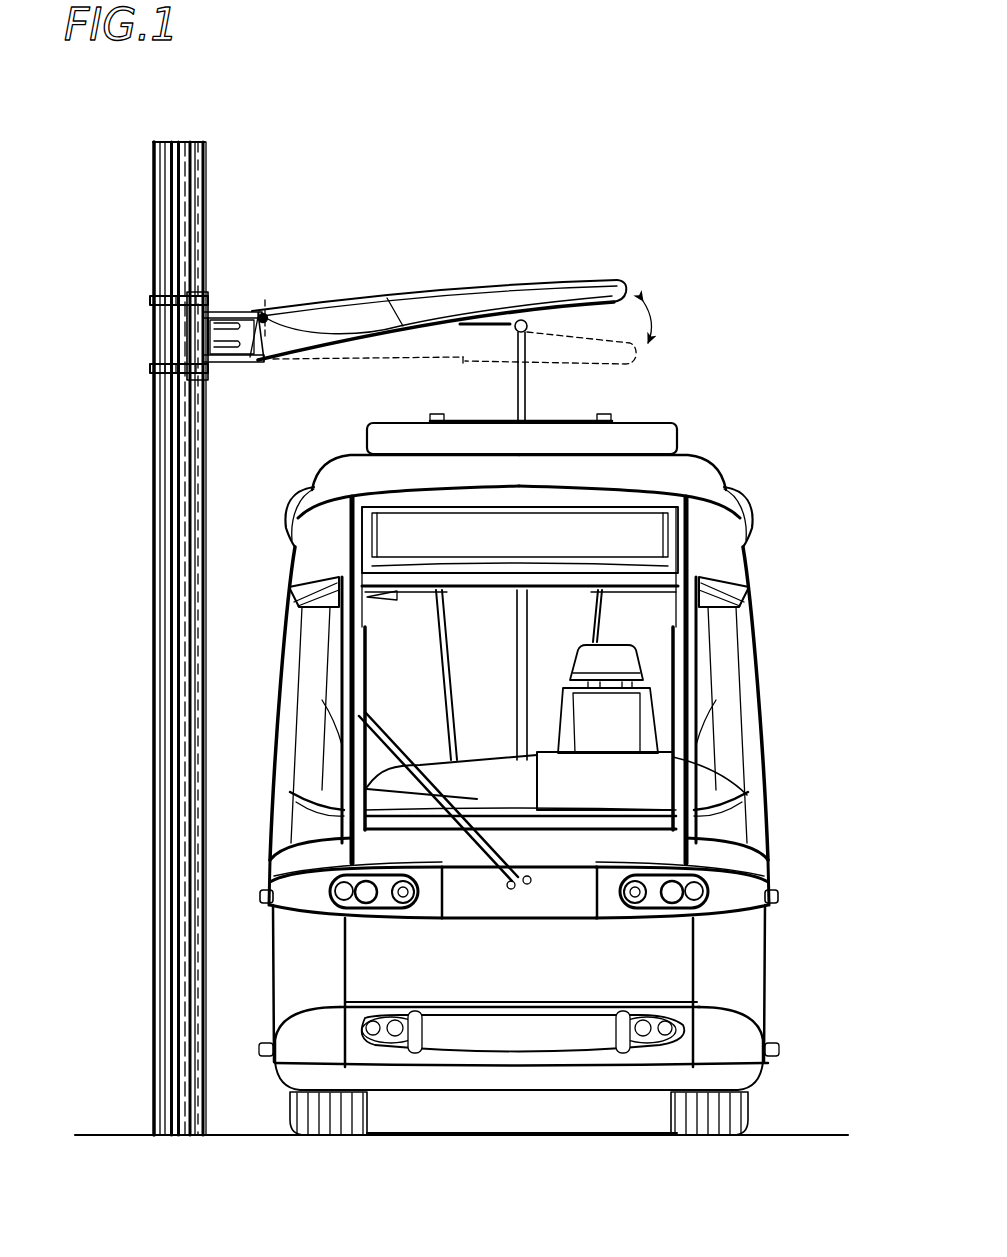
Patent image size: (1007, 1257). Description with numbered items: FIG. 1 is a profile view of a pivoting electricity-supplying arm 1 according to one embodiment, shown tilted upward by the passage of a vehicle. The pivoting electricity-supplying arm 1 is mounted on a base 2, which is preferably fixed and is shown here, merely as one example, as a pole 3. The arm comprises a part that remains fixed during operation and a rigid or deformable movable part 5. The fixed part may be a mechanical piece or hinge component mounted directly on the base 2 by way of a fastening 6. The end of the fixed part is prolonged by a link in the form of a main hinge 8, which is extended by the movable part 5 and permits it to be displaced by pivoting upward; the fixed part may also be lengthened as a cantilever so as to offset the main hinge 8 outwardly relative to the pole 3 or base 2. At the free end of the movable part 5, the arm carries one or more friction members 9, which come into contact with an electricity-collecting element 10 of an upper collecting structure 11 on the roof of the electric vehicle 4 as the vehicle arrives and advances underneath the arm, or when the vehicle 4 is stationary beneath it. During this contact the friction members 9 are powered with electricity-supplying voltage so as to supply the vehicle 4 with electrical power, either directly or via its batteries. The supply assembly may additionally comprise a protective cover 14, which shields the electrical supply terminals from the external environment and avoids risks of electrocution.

The pivoting electricity-supplying arm 1 is at (623, 138).
The base 2 is at (225, 168).
The pole 3 is at (179, 638).
The electric vehicle 4 is at (778, 458).
The movable part 5 is at (433, 267).
The fastening 6 is at (235, 297).
The main hinge 8 is at (265, 313).
The friction members 9 is at (597, 316).
The electricity-collecting element 10 is at (514, 331).
The upper collecting structure 11 is at (532, 400).
The protective cover 14 is at (344, 312).